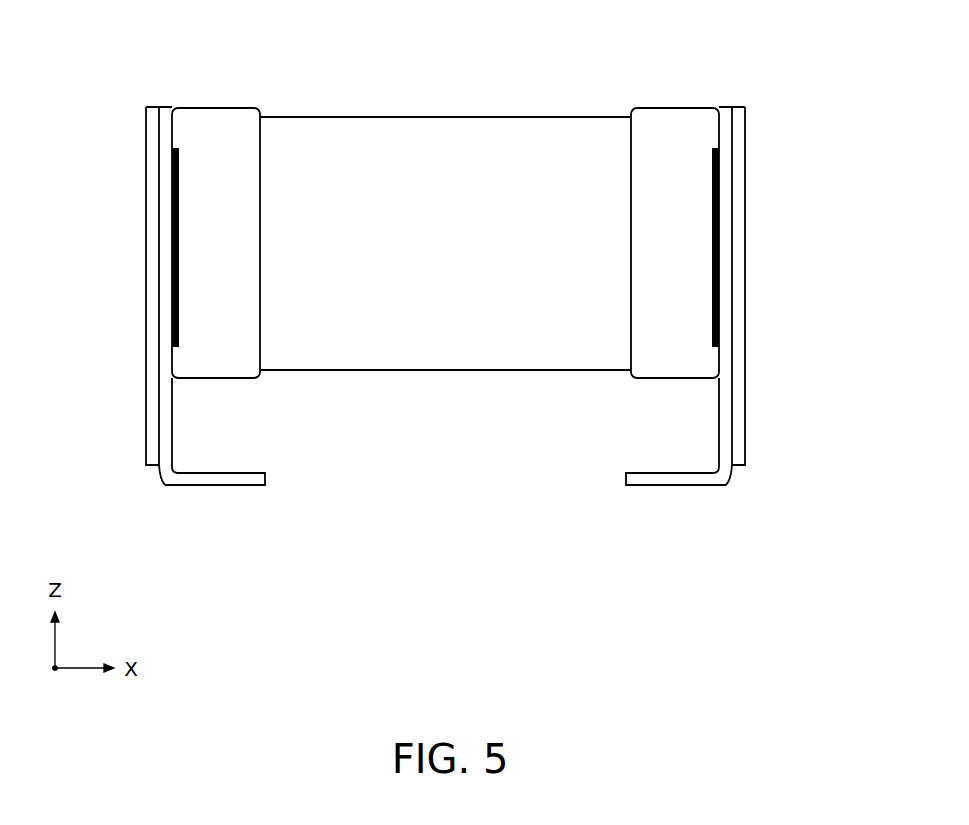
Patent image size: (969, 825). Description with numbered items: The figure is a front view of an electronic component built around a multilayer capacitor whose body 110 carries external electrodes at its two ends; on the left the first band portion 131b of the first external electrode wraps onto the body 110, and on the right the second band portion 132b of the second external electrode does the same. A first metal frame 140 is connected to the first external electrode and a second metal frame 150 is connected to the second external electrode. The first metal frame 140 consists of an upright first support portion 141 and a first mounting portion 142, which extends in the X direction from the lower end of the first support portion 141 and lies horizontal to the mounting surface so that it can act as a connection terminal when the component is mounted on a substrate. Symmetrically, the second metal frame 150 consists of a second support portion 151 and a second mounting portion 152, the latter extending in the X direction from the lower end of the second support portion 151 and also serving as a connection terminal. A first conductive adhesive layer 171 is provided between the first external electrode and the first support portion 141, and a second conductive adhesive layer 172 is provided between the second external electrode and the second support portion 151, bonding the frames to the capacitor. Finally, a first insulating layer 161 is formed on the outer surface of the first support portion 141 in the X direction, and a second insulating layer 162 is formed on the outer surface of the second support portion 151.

The body 110 is at (422, 130).
The first band portion 131b is at (212, 118).
The second band portion 132b is at (668, 118).
The first metal frame 140 is at (207, 483).
The first support portion 141 is at (167, 407).
The first mounting portion 142 is at (160, 547).
The second metal frame 150 is at (686, 483).
The second support portion 151 is at (730, 408).
The second mounting portion 152 is at (734, 547).
The first insulating layer 161 is at (148, 295).
The second insulating layer 162 is at (744, 295).
The first conductive adhesive layer 171 is at (178, 150).
The second conductive adhesive layer 172 is at (713, 150).